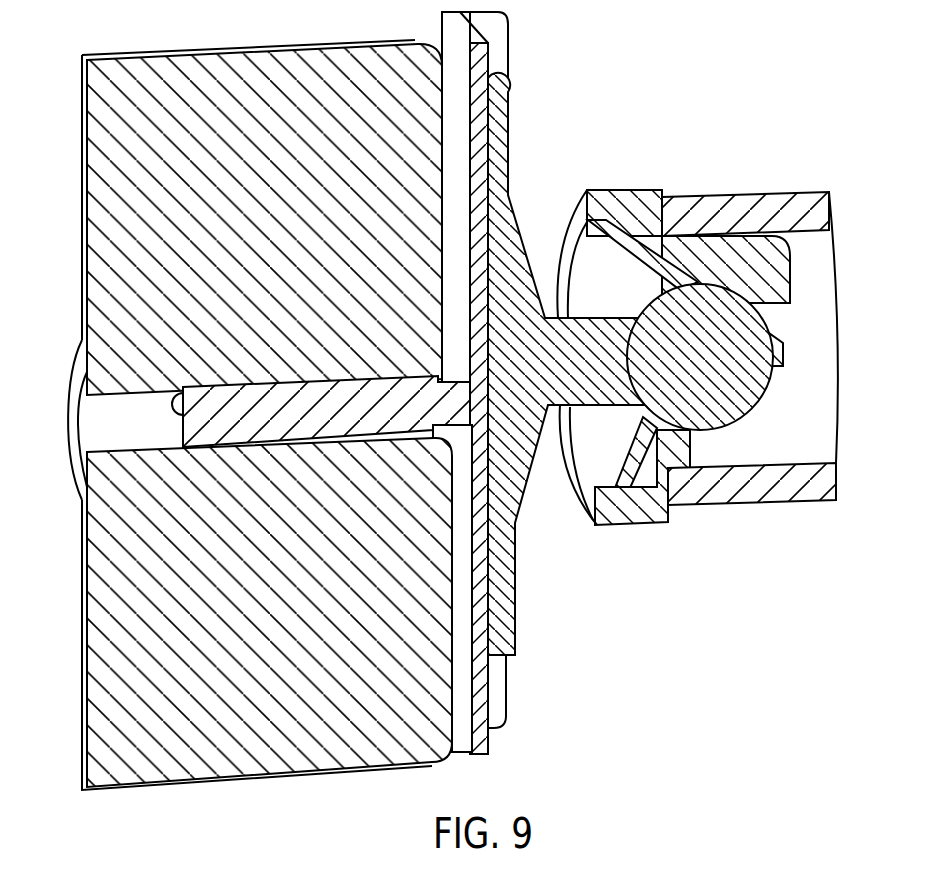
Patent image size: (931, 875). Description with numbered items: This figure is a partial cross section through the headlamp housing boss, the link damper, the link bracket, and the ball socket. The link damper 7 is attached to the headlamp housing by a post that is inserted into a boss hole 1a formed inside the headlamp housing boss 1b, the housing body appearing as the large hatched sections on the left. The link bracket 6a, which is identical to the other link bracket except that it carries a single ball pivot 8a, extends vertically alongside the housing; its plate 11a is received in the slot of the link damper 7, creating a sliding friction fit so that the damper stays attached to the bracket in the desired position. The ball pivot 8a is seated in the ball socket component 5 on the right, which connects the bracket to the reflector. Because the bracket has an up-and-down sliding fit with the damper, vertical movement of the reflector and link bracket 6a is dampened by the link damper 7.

The boss hole 1a is at (85, 432).
The headlamp housing boss 1b is at (92, 527).
The housing 5 is at (822, 485).
The link bracket 6a is at (503, 110).
The link damper 7 is at (190, 413).
The ball pivot 8a is at (740, 388).
The plate 11a is at (508, 625).